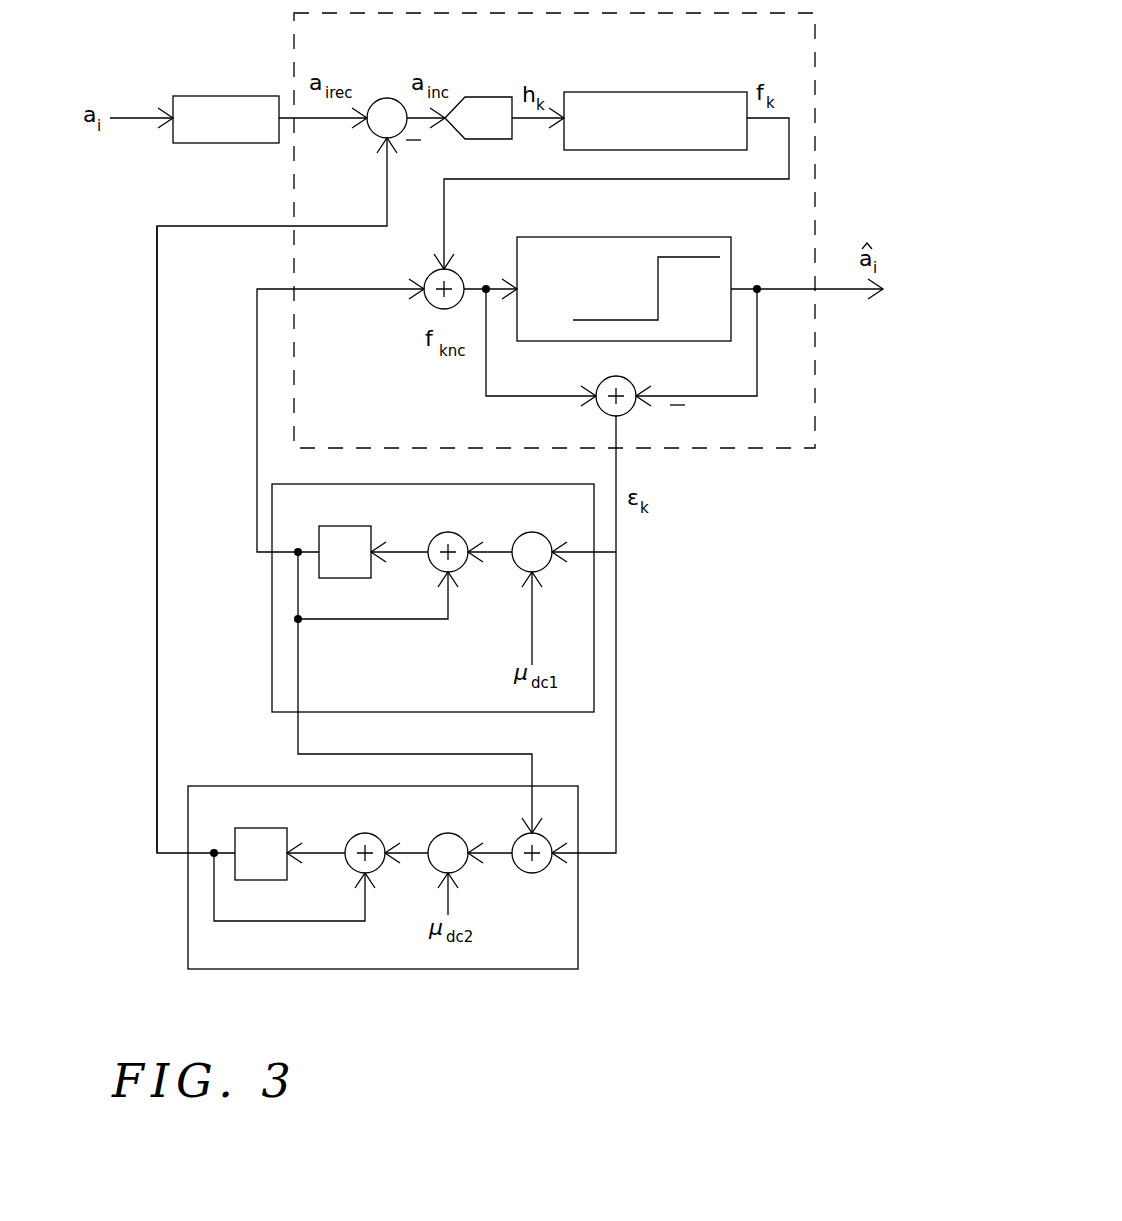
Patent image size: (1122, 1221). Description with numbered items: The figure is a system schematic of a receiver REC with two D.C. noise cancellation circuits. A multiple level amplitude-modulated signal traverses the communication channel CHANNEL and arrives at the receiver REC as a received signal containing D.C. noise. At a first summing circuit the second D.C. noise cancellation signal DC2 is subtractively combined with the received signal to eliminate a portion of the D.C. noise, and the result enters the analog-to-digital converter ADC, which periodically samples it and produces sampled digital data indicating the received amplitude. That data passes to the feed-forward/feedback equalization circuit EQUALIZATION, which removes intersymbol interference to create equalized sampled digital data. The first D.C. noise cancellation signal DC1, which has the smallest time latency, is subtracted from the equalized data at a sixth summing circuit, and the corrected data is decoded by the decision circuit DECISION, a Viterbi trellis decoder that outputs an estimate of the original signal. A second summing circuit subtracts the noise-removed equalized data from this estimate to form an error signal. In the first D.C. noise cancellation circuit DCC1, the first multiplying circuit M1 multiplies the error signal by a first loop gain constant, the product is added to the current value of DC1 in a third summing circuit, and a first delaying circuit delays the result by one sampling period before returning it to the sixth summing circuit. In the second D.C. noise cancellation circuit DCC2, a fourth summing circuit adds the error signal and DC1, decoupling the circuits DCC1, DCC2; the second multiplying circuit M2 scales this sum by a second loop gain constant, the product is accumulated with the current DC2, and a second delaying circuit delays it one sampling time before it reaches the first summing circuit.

The communication channel CHANNEL is at (226, 119).
The analog-to-digital converter ADC is at (478, 118).
The feed-forward/feedback equalization circuit EQUALIZATION is at (655, 121).
The decision circuit DECISION is at (624, 289).
The receiver REC is at (554, 230).
The first D.C. noise cancellation signal DC1 is at (315, 420).
The second D.C. noise cancellation signal DC2 is at (169, 539).
The first D.C. noise cancellation circuit DCC1 is at (433, 598).
The second D.C. noise cancellation circuit DCC2 is at (383, 877).
The first multiplying circuit M1 is at (533, 538).
The second multiplying circuit M2 is at (449, 839).